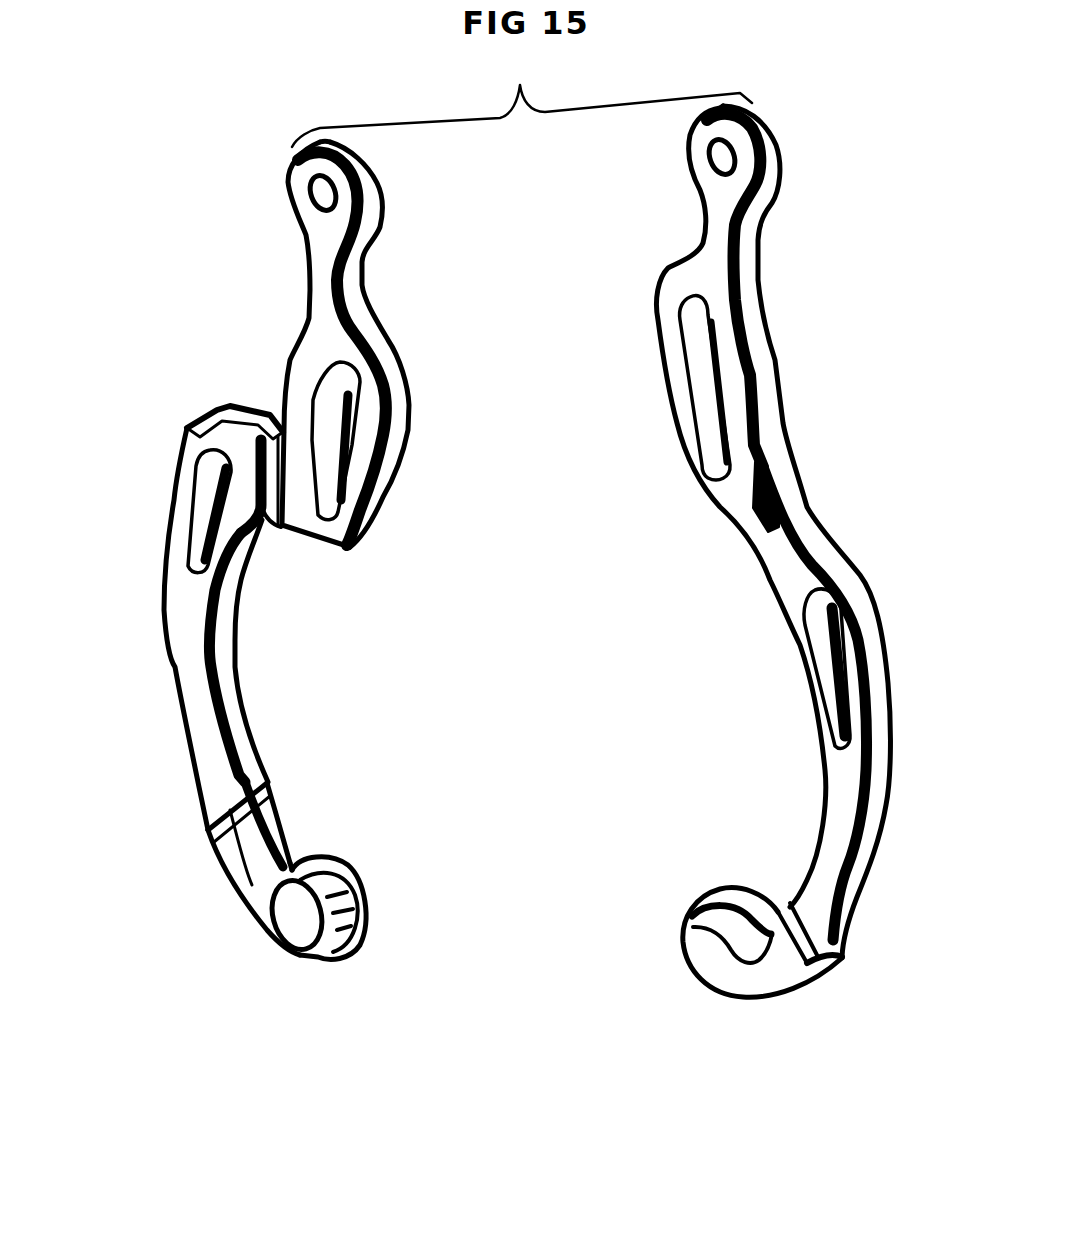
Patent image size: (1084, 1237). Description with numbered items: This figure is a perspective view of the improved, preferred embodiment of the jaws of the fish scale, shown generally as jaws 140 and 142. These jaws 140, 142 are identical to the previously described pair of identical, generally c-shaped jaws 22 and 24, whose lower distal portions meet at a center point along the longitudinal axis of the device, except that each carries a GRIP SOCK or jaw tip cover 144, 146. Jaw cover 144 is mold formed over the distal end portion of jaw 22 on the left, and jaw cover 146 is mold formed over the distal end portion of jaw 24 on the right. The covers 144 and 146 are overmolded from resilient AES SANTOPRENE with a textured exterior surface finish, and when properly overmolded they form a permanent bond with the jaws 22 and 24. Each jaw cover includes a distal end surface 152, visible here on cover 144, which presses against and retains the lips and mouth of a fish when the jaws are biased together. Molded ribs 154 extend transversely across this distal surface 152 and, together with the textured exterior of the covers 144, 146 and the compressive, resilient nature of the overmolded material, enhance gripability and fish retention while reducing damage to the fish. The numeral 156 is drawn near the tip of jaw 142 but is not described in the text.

The jaw 140 is at (182, 732).
The jaw 22 is at (240, 667).
The jaw tip cover 144 is at (277, 807).
The distal end surface 152 is at (363, 910).
The molded ribs 154 is at (320, 958).
The jaw 142 is at (822, 531).
The jaw 24 is at (817, 770).
The hook opening 156 is at (693, 907).
The jaw tip cover 146 is at (730, 1000).